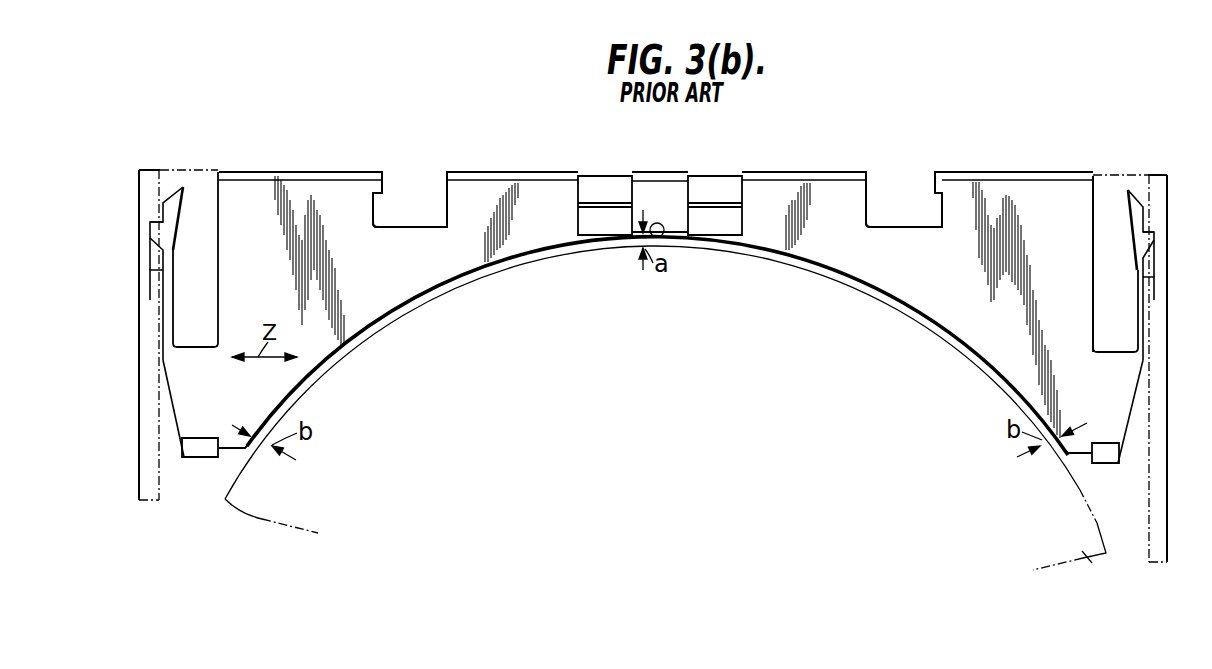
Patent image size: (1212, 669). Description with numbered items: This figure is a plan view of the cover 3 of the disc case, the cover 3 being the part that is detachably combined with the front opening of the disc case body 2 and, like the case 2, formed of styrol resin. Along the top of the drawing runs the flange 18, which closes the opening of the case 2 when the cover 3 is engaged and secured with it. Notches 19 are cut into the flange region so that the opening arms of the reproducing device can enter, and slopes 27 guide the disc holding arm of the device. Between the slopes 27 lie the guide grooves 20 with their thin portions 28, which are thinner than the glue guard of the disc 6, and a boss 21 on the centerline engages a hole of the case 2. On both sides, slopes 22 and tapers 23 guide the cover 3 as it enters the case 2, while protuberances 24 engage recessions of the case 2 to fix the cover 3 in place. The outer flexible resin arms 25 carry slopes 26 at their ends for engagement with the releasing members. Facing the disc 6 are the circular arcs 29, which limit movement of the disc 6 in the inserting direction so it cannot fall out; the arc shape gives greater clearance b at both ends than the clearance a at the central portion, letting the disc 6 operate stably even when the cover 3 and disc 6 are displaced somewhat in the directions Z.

The disc case body 2 is at (138, 426).
The cover 3 is at (1005, 173).
The disc 6 is at (1087, 557).
The flange 18 is at (823, 173).
The notches 19 is at (408, 197).
The guide grooves 20 is at (617, 175).
The bosses 21 is at (664, 236).
The slopes 22 is at (175, 420).
The tapers 23 is at (199, 457).
The protuberances 24 is at (157, 236).
The arms 25 is at (168, 308).
The slopes 26 is at (178, 190).
The slopes 27 is at (592, 176).
The thin portions 28 is at (602, 233).
The circular arcs 29 is at (342, 355).